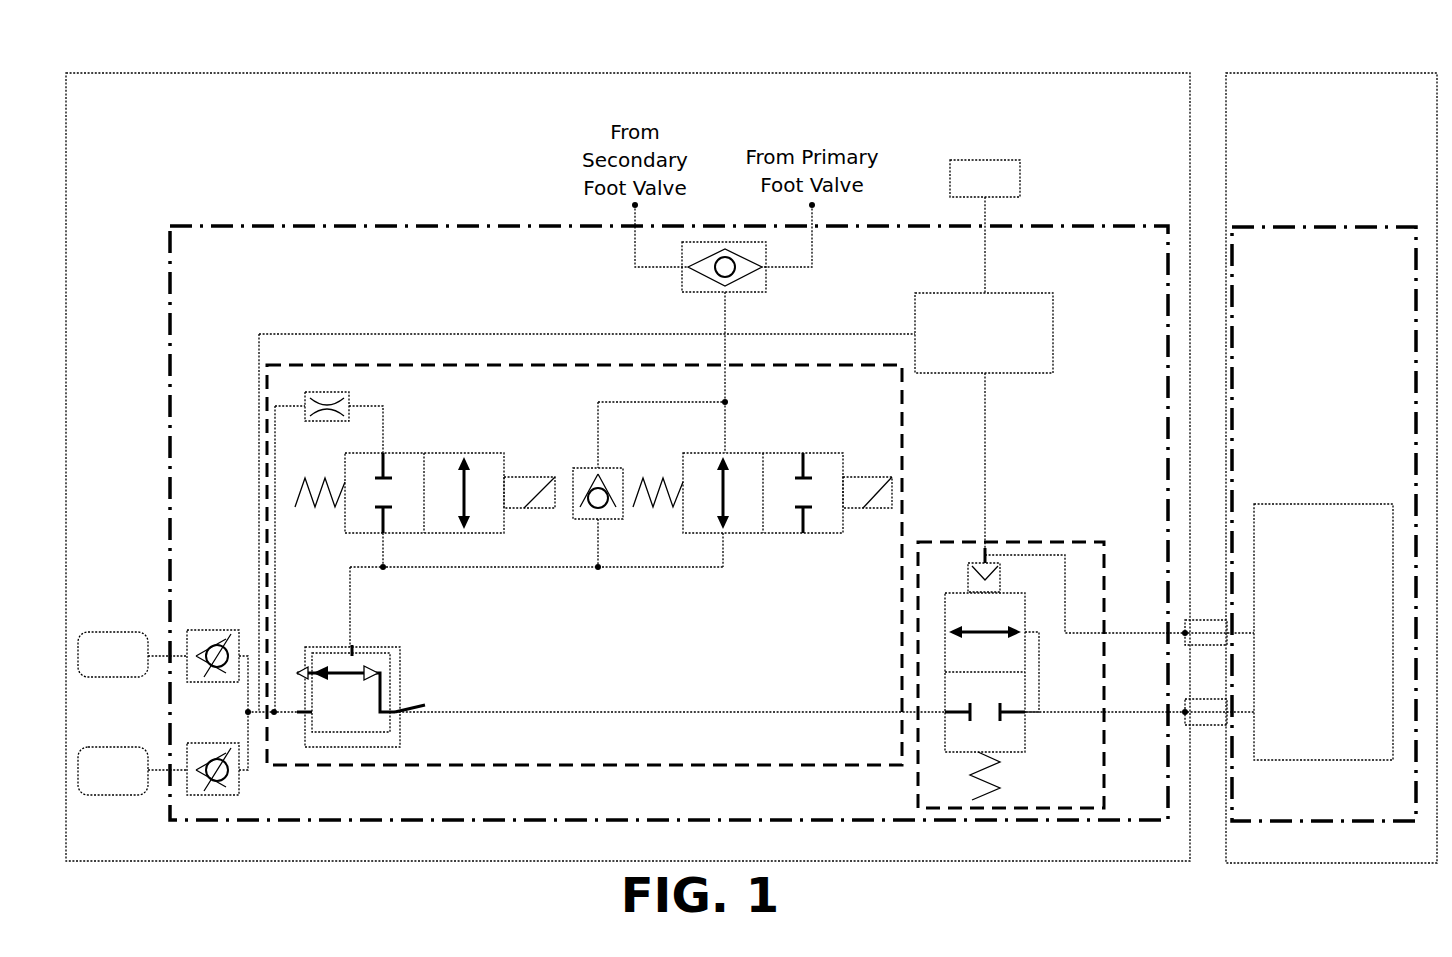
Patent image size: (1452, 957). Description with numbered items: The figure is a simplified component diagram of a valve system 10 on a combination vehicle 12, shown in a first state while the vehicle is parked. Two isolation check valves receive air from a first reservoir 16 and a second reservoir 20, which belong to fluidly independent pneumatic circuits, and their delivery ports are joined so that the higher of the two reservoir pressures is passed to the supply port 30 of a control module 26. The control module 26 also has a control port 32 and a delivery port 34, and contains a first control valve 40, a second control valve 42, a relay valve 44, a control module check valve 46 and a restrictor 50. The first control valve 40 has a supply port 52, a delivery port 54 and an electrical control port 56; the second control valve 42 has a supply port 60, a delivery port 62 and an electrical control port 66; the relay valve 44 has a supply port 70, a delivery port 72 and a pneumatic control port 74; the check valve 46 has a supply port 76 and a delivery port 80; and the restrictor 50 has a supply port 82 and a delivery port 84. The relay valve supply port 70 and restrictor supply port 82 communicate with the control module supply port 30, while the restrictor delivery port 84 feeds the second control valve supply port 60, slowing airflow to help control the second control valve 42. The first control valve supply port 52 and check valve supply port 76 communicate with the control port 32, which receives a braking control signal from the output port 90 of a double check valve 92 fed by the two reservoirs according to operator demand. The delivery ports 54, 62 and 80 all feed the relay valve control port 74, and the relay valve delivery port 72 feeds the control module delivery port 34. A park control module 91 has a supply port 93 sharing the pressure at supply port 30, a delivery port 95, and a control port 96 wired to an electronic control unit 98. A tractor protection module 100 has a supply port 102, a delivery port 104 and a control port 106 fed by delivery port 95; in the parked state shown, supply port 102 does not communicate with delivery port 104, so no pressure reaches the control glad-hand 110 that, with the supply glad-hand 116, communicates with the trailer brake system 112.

The valve system 10 is at (414, 206).
The combination vehicle 12 is at (1240, 60).
The first reservoir 16 is at (113, 654).
The second reservoir 20 is at (113, 771).
The control module 26 is at (300, 365).
The control module supply port 30 is at (272, 716).
The control module control port 32 is at (736, 365).
The control module delivery port 34 is at (918, 712).
The first control valve 40 is at (763, 453).
The second control valve 42 is at (424, 453).
The relay valve 44 is at (400, 656).
The control module check valve 46 is at (573, 478).
The restrictor 50 is at (340, 418).
The first control valve supply port 52 is at (724, 452).
The first control valve delivery port 54 is at (724, 535).
The first control valve control port 56 is at (683, 478).
The second control valve supply port 60 is at (387, 452).
The second control valve delivery port 62 is at (385, 535).
The second control valve control port 66 is at (345, 476).
The relay valve supply port 70 is at (292, 712).
The relay valve delivery port 72 is at (420, 706).
The relay valve control port 74 is at (352, 647).
The check valve supply port 76 is at (598, 468).
The check valve delivery port 80 is at (598, 520).
The restrictor supply port 82 is at (305, 406).
The restrictor delivery port 84 is at (352, 406).
The double check valve output port 90 is at (750, 292).
The park control module 91 is at (1020, 293).
The double check valve 92 is at (710, 292).
The park control module supply port 93 is at (915, 334).
The park control module delivery port 95 is at (990, 373).
The park control module control port 96 is at (985, 293).
The electronic control unit 98 is at (992, 160).
The tractor protection module 100 is at (1104, 752).
The tractor protection supply port 102 is at (918, 714).
The tractor protection delivery port 104 is at (1104, 712).
The tractor protection control port 106 is at (985, 545).
The control glad-hand 110 is at (1139, 712).
The brake system 112 is at (1323, 632).
The supply glad-hand 116 is at (1119, 600).